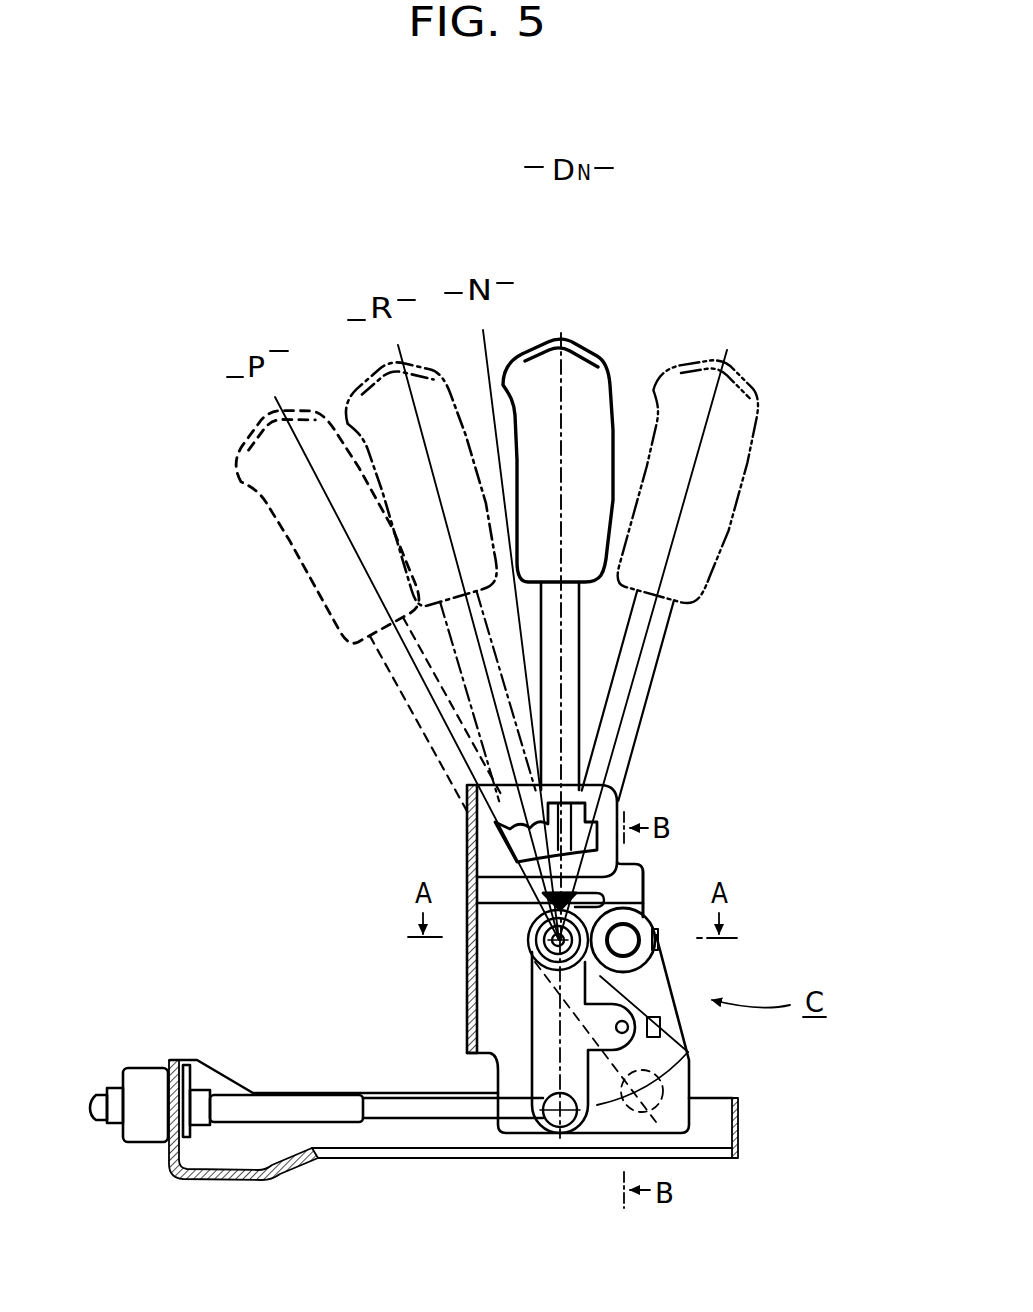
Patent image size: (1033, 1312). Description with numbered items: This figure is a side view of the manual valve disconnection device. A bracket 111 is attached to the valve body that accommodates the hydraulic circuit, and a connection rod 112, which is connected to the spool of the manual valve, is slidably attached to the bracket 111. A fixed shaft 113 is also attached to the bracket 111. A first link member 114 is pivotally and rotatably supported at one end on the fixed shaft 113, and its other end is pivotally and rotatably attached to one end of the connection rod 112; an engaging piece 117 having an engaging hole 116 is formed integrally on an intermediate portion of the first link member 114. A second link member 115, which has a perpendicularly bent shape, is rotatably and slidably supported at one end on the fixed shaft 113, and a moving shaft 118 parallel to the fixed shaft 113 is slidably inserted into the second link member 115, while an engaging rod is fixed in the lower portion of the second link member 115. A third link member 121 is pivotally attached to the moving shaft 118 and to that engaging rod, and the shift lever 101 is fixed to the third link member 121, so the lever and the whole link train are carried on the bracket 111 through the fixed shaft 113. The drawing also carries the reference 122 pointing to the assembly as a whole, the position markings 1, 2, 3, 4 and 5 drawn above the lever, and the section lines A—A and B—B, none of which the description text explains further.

The shift lever 101 is at (726, 497).
The bracket 111 is at (390, 1158).
The connection rod 112 is at (472, 1120).
The fixed shaft 113 is at (531, 954).
The first link member 114 is at (540, 1030).
The second link member 115 is at (637, 983).
The engaging hole 116 is at (688, 1055).
The engaging piece 117 is at (604, 1040).
The moving shaft 118 is at (650, 912).
The third link member 121 is at (645, 864).
The shift lever device 122 is at (372, 864).
The first shift position 1 is at (390, 233).
The second shift position 2 is at (795, 252).
The third shift position 3 is at (375, 180).
The fourth shift position 4 is at (808, 207).
The fifth shift position 5 is at (387, 120).